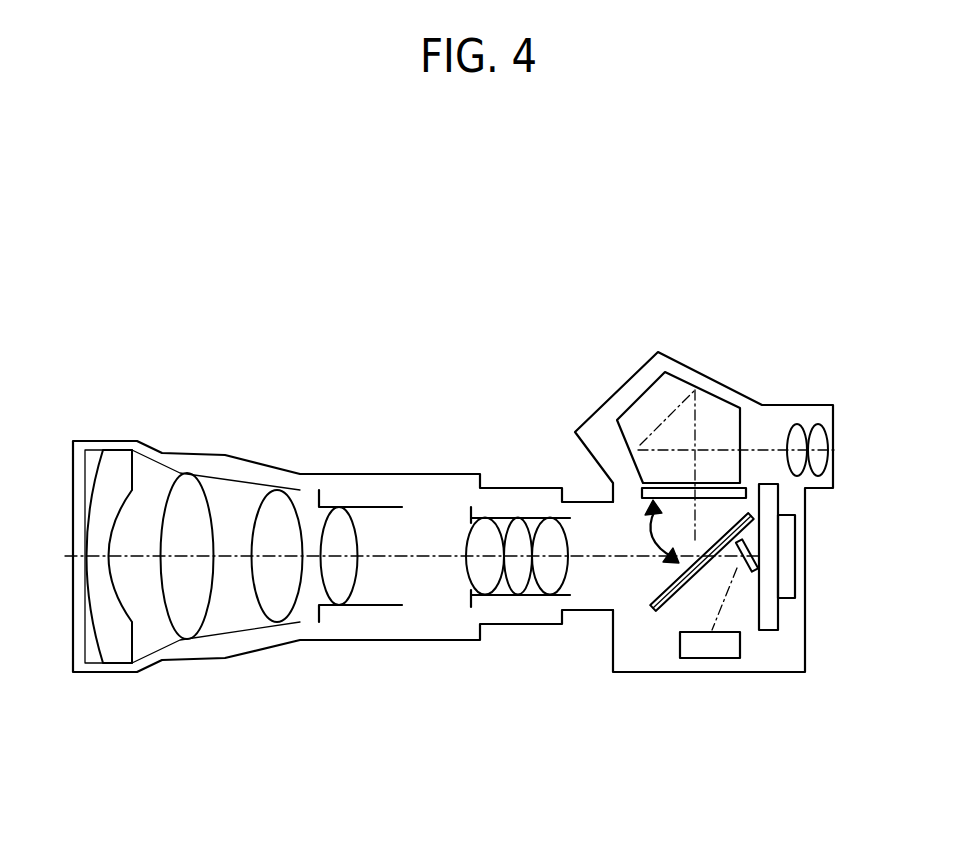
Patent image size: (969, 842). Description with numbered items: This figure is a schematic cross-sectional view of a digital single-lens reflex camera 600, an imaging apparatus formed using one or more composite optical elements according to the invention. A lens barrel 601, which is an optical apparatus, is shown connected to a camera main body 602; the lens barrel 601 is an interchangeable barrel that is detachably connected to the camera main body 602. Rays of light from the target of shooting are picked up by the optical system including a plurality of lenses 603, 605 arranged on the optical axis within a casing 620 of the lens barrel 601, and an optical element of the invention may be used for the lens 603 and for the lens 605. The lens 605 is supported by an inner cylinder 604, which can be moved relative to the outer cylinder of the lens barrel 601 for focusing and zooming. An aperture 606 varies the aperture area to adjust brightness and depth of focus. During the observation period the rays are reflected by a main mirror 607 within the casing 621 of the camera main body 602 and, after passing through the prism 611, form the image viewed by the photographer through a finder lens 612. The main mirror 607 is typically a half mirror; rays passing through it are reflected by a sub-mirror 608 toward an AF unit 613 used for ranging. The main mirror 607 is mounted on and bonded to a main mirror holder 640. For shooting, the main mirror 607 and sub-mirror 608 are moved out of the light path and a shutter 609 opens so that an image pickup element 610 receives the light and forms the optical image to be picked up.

The digital single-lens reflex camera 600 is at (564, 215).
The lens barrel 601 is at (583, 312).
The camera main body 602 is at (845, 312).
The lens 603 is at (115, 465).
The inner cylinder 604 is at (357, 506).
The lens 605 is at (341, 594).
The aperture 606 is at (467, 519).
The main mirror 607 is at (650, 608).
The sub-mirror 608 is at (752, 572).
The shutter 609 is at (770, 620).
The image pickup element 610 is at (793, 587).
The prism 611 is at (713, 412).
The finder lens 612 is at (820, 422).
The AF unit 613 is at (718, 650).
The casing 620 is at (257, 462).
The casing 621 is at (608, 395).
The main mirror holder 640 is at (658, 603).